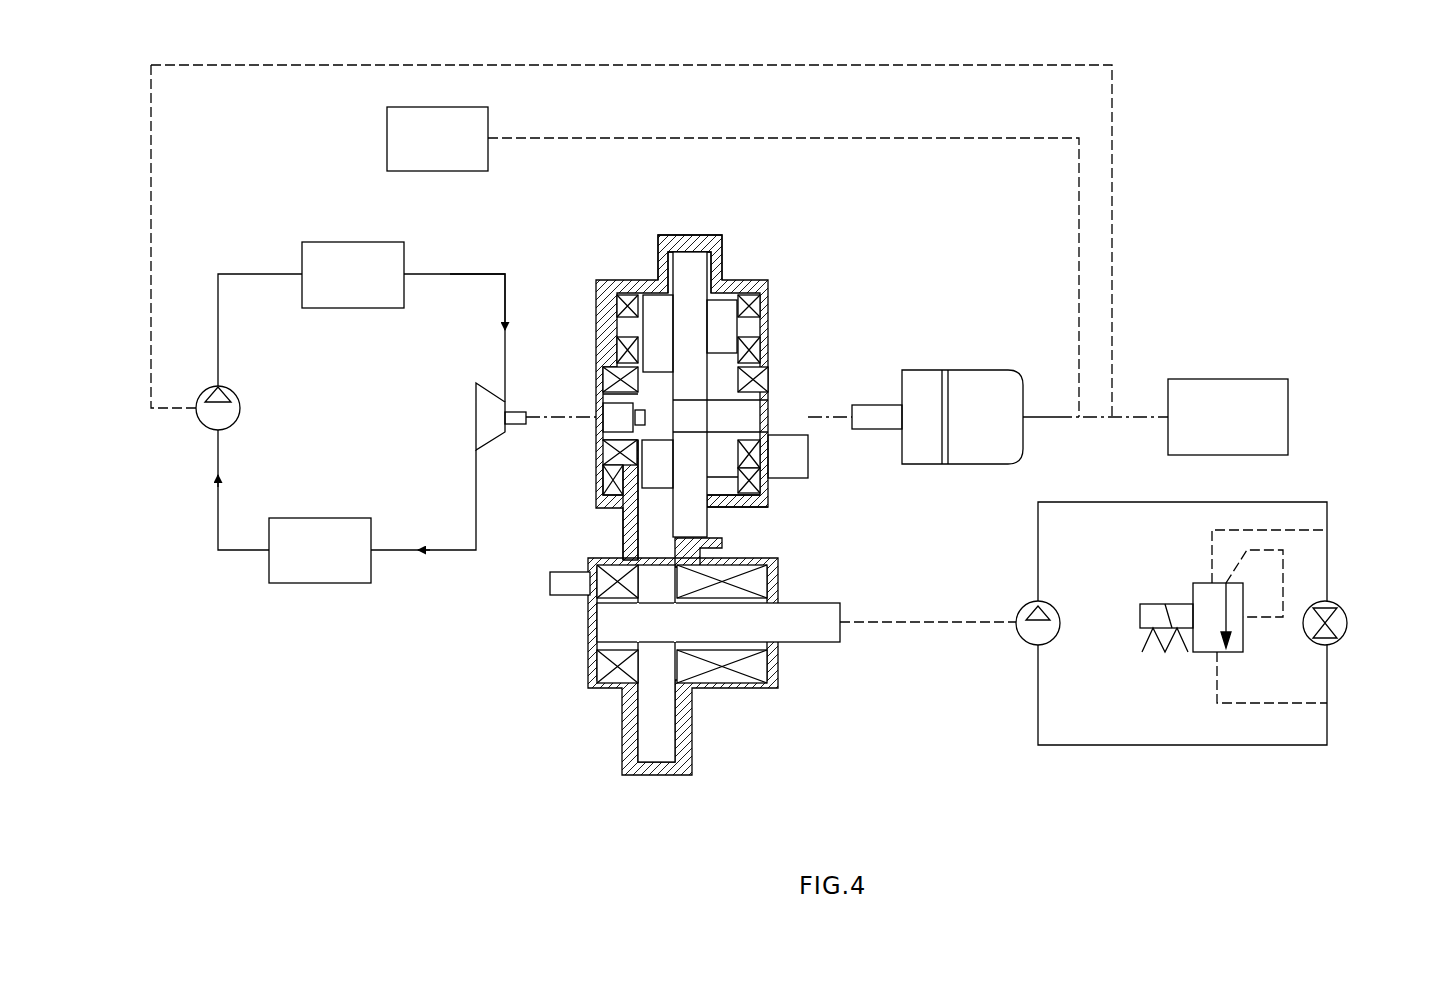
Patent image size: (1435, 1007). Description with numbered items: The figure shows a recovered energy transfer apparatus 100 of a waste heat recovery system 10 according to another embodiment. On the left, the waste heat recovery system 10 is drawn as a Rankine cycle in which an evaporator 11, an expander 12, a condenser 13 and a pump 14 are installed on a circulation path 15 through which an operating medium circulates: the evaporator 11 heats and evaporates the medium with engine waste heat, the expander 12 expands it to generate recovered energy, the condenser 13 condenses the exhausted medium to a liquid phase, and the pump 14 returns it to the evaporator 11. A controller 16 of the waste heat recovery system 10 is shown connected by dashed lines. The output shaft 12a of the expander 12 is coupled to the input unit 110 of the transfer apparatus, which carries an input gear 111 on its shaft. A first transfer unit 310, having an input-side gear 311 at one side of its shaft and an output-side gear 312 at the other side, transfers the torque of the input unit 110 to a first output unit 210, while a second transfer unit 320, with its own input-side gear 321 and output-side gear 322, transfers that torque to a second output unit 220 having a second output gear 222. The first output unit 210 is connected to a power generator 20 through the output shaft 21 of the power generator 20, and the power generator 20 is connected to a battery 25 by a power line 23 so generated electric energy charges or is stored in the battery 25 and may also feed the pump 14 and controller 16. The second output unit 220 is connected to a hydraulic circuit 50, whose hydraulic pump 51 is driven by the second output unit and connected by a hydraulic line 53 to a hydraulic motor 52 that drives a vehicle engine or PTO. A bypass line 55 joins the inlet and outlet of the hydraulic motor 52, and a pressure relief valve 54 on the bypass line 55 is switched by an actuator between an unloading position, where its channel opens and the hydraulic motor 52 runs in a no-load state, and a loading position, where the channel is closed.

The waste heat recovery system 10 is at (250, 262).
The evaporator 11 is at (349, 252).
The expander 12 is at (481, 416).
The output shaft of the expander 12a is at (522, 410).
The condenser 13 is at (315, 528).
The pump 14 is at (200, 424).
The circulation path 15 is at (452, 275).
The controller 16 is at (397, 137).
The power generator 20 is at (980, 380).
The output shaft of the power generator 21 is at (870, 412).
The power line 23 is at (1047, 422).
The battery 25 is at (1225, 391).
The hydraulic circuit 50 is at (1189, 621).
The hydraulic pump 51 is at (1015, 638).
The hydraulic motor 52 is at (1353, 620).
The hydraulic line 53 is at (1180, 747).
The pressure relief valve 54 is at (1200, 655).
The bypass line 55 is at (1270, 705).
The power transmission housing 100 is at (684, 376).
The input unit 110 is at (604, 437).
The input gear 111 is at (598, 501).
The first output unit 210 is at (747, 377).
The second output unit 220 is at (779, 690).
The second output gear 222 is at (657, 750).
The first transfer unit 310 is at (715, 265).
The input-side gear 311 is at (690, 262).
The output-side gear 312 is at (727, 309).
The second transfer unit 320 is at (716, 514).
The input-side gear 321 is at (695, 528).
The output-side gear 322 is at (646, 458).